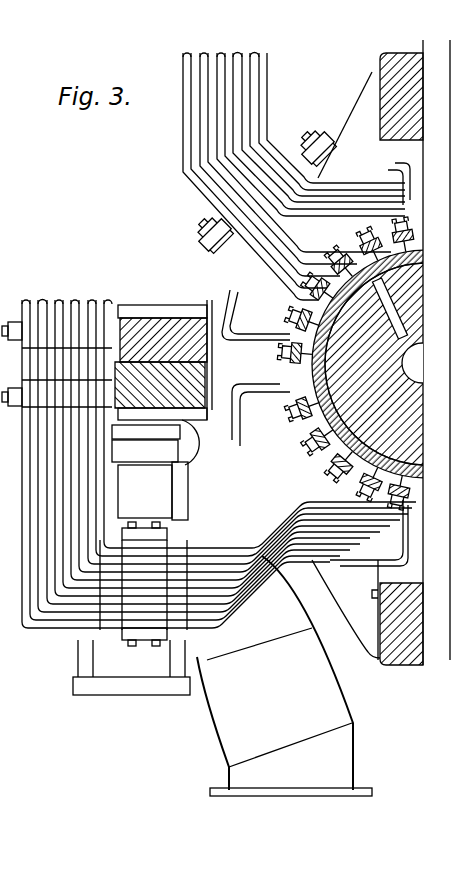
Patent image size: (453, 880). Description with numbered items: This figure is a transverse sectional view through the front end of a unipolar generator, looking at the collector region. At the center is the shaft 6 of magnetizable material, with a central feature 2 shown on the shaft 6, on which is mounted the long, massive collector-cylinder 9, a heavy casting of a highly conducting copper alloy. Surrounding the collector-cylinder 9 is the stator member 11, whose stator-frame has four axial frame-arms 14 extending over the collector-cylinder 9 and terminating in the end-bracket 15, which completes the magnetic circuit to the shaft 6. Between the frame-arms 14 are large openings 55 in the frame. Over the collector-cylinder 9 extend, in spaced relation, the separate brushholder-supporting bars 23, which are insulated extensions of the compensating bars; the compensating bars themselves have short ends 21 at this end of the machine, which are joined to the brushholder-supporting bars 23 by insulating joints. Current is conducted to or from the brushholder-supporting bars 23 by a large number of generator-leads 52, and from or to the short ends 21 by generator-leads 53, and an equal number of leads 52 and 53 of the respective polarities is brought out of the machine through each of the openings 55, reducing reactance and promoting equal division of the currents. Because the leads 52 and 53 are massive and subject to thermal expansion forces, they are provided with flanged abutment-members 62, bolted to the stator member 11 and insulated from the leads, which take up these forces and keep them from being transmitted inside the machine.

The shaft 2 is at (422, 363).
The shaft 6 is at (362, 353).
The collector-cylinder 9 is at (418, 257).
The stator member 11 is at (152, 330).
The frame-arms 14 is at (392, 56).
The end-bracket 15 is at (370, 72).
The short ends of compensating bars 21 is at (420, 500).
The brushholder-supporting bars 23 is at (405, 225).
The generator-leads 52 is at (404, 180).
The generator-leads 53 is at (370, 532).
The openings 55 is at (188, 228).
The flanged abutment-members 62 is at (323, 147).